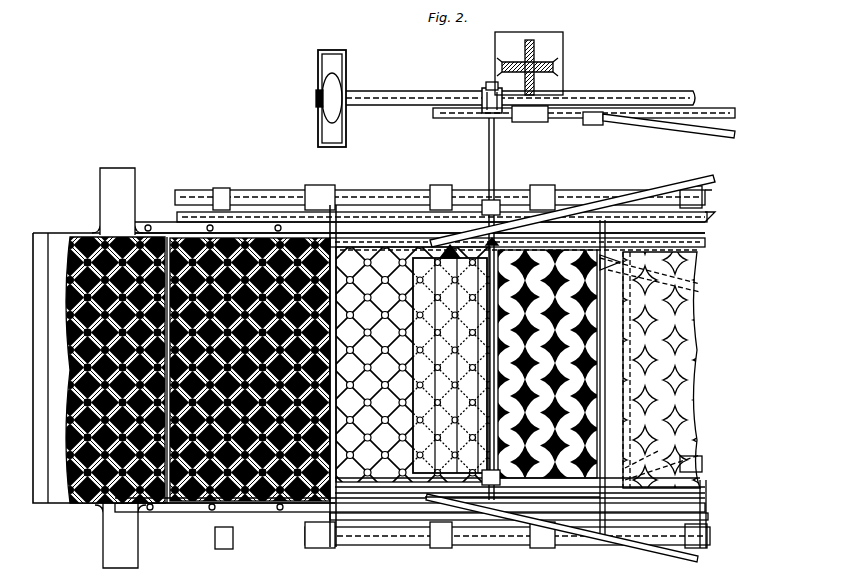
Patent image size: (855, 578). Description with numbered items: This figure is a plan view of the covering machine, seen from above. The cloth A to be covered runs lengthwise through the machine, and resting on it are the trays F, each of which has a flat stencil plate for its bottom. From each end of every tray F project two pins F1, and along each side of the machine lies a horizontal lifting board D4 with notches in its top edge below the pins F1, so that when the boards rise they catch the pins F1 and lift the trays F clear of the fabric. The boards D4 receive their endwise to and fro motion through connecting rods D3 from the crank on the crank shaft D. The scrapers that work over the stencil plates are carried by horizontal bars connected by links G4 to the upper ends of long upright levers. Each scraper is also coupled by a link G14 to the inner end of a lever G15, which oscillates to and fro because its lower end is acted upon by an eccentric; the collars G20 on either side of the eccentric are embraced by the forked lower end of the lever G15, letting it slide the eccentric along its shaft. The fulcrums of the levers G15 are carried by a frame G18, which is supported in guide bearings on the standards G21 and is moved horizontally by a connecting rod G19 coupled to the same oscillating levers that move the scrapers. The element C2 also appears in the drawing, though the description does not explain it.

The cloth A is at (45, 240).
The frame or tray F is at (352, 278).
The pin F1 is at (342, 198).
The horizontal board D4 is at (388, 193).
The connecting rod D3 is at (655, 268).
The crank shaft D is at (663, 465).
The link C2 is at (640, 256).
The link G4 is at (712, 182).
The link G14 is at (495, 170).
The lever G15 is at (358, 92).
The frame G18 is at (584, 115).
The connecting rod G19 is at (676, 130).
The collar G20 is at (484, 90).
The standard G21 is at (530, 78).